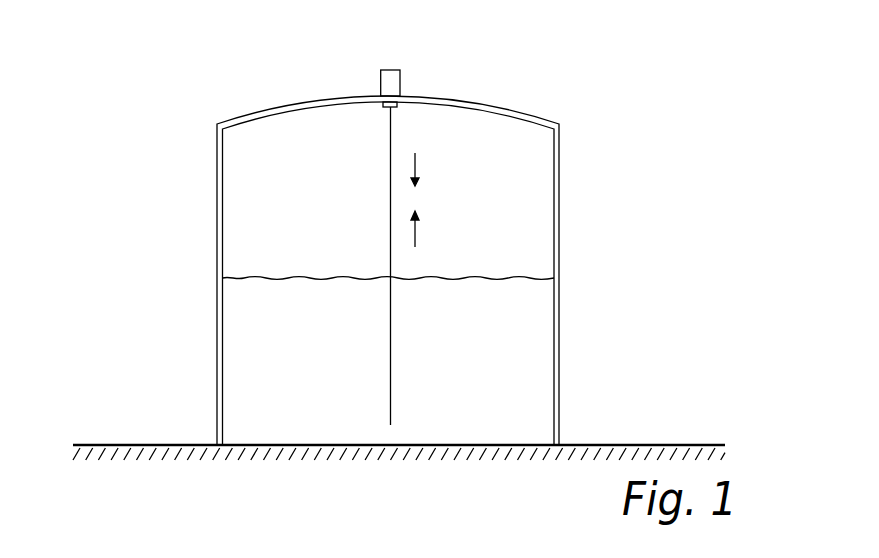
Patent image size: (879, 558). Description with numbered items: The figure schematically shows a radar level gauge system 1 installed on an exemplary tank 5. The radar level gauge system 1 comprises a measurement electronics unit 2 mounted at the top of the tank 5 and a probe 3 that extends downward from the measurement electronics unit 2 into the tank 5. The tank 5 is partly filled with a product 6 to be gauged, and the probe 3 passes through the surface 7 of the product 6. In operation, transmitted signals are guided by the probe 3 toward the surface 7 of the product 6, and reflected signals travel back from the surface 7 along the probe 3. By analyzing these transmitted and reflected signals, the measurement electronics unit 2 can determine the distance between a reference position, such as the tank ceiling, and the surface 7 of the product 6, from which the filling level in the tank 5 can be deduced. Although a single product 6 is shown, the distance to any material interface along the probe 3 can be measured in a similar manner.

The radar level gauge system 1 is at (399, 235).
The measurement electronics unit 2 is at (380, 82).
The probe 3 is at (395, 140).
The tank 5 is at (559, 159).
The product 6 is at (537, 352).
The surface of the product 7 is at (538, 277).